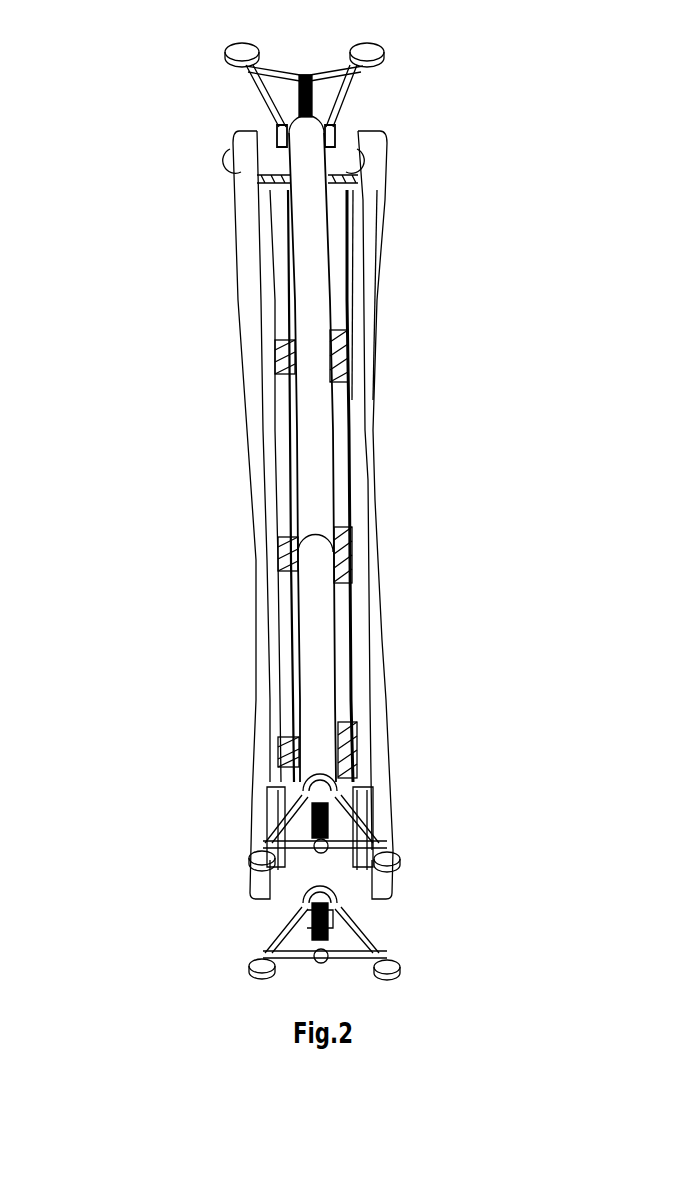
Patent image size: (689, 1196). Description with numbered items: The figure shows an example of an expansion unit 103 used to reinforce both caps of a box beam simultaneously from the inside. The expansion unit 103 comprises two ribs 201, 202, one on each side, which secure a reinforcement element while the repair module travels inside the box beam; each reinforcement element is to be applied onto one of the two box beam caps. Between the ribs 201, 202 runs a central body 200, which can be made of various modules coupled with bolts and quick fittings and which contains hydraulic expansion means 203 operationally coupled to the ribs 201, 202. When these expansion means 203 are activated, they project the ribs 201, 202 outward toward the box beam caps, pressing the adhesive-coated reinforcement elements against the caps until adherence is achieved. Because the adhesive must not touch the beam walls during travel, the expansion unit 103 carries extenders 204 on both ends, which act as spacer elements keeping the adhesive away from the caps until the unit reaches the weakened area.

The expansion unit 103 is at (430, 446).
The central body 200 is at (313, 275).
The rib 201 is at (380, 692).
The rib 202 is at (253, 805).
The hydraulic expansion means 203 is at (290, 345).
The extenders 204 is at (225, 52).